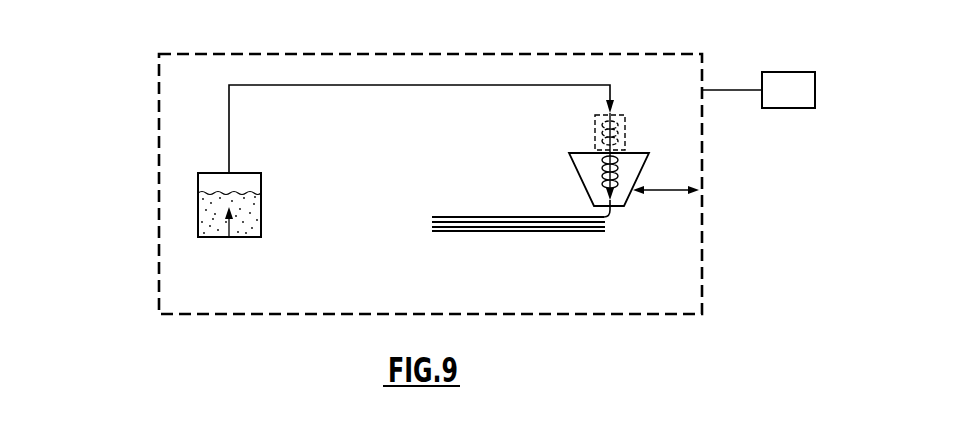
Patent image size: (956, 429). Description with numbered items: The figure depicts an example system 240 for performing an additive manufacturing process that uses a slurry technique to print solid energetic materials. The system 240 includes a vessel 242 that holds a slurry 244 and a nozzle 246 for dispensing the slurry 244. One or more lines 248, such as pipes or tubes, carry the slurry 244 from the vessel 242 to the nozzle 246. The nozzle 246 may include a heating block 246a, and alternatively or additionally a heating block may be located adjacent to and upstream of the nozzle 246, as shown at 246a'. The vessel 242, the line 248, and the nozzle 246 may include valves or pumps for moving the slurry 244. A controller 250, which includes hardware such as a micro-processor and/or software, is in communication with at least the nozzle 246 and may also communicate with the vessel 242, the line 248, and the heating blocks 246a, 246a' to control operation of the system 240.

The system 240 is at (104, 271).
The vessel 242 is at (261, 215).
The slurry 244 is at (229, 237).
The nozzle 246 is at (579, 172).
The heating block 246a is at (649, 147).
The heating block 246a' is at (551, 136).
The line 248 is at (403, 86).
The controller 250 is at (790, 108).